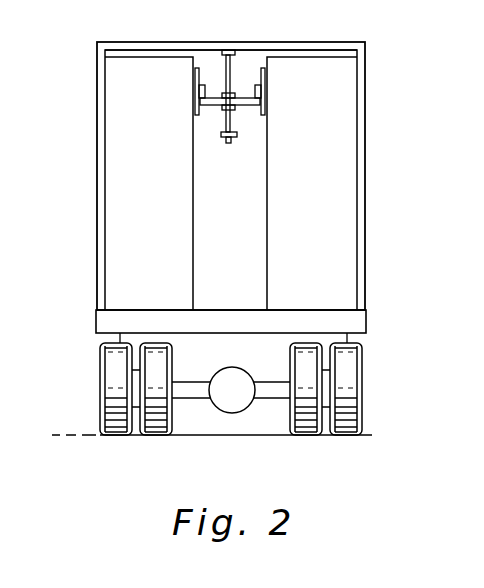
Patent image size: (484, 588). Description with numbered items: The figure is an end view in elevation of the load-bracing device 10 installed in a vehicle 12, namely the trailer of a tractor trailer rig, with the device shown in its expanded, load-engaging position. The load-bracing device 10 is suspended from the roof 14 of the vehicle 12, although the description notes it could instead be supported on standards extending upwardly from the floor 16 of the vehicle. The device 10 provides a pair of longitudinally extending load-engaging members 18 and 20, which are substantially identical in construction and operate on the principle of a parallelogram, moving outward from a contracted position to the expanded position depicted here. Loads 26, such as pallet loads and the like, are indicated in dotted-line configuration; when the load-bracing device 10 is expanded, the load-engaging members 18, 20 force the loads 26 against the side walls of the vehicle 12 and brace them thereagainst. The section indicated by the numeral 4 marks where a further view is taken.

The section line 4- 4 is at (388, 80).
The load-bracing device 10 is at (239, 149).
The vehicle 12 is at (57, 140).
The roof 14 is at (224, 42).
The floor 16 is at (220, 310).
The load-engaging member 18 is at (273, 93).
The load-engaging member 20 is at (190, 90).
The loads 26 is at (135, 212).